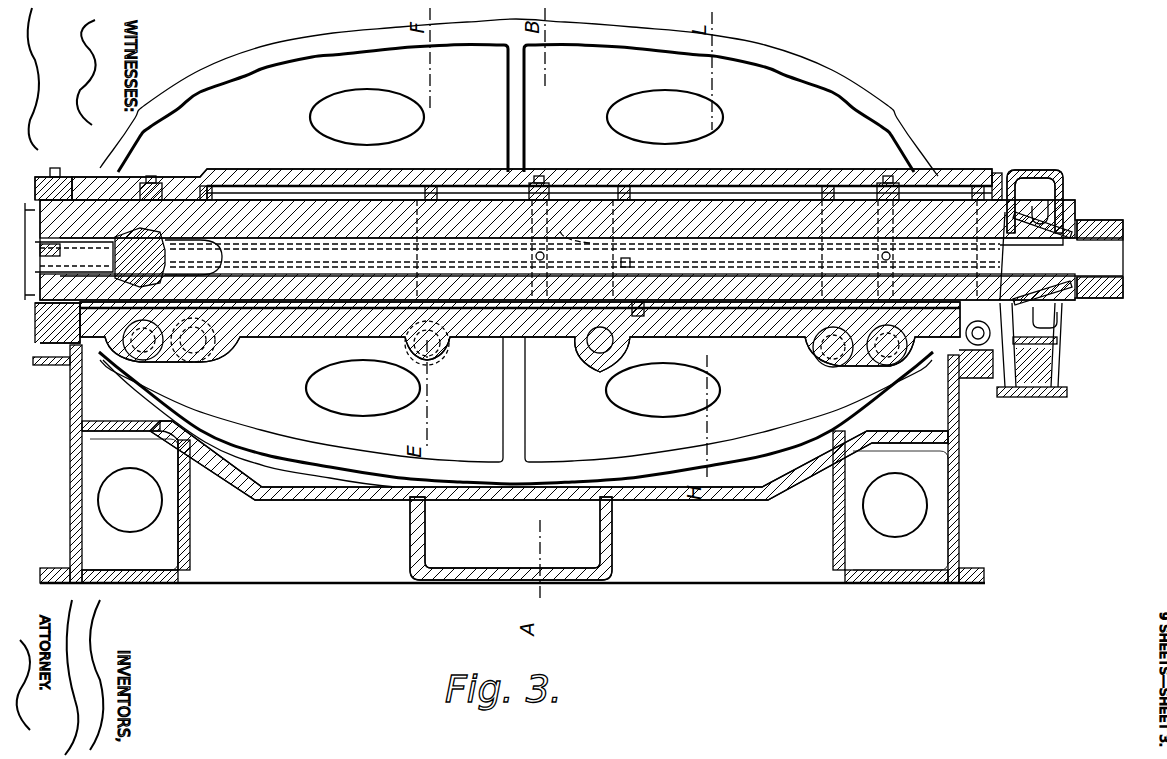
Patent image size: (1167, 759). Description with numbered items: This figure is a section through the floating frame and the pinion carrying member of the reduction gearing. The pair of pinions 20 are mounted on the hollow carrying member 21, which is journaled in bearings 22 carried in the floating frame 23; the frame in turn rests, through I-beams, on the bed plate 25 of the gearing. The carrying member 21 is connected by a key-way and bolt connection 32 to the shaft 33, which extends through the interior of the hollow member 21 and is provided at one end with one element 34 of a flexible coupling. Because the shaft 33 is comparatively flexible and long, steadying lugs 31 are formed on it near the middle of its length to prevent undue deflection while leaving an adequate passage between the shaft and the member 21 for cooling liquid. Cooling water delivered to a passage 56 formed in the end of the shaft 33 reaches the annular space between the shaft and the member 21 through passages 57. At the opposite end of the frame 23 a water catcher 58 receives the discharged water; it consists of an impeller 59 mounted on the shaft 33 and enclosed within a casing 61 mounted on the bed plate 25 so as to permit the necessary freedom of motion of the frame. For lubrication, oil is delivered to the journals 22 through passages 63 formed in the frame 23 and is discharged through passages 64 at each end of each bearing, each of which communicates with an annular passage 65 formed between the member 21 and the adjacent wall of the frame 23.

The pinions 20 is at (307, 197).
The hollow carrying member 21 is at (782, 220).
The bearings 22 is at (82, 187).
The floating frame 23 is at (827, 88).
The bed plate 25 is at (953, 503).
The steadying lugs 31 is at (631, 263).
The key-way and bolt connection 32 is at (27, 203).
The shaft 33 is at (570, 243).
The flexible coupling element 34 is at (1103, 227).
The passage 56 is at (35, 247).
The passages 57 is at (188, 238).
The water catcher 58 is at (1057, 170).
The impeller 59 is at (1035, 222).
The casing 61 is at (1032, 175).
The passages 63 is at (152, 192).
The passages 64 is at (80, 340).
The annular passage 65 is at (205, 187).